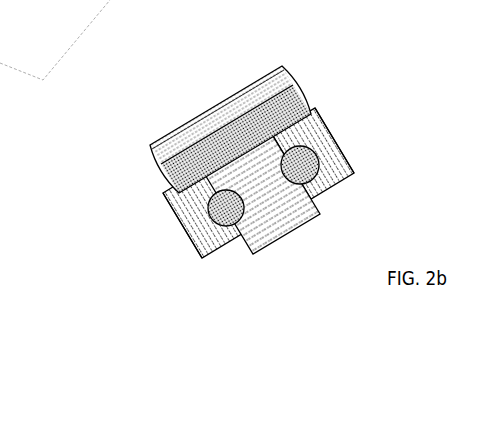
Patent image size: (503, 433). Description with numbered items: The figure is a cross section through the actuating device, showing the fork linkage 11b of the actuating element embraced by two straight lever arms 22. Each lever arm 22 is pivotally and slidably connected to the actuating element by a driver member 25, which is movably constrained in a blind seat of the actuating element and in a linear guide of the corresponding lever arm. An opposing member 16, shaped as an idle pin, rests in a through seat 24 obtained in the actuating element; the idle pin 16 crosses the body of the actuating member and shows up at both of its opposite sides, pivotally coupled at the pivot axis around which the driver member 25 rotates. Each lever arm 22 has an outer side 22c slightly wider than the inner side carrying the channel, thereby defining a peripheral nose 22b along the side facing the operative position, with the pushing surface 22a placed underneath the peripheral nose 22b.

The fork linkage 11b is at (234, 183).
The opposing member 16 is at (293, 110).
The lever arm 22 is at (278, 187).
The pushing surface 22a is at (185, 192).
The peripheral nose 22b is at (313, 108).
The outer side 22c is at (333, 132).
The through seat 24 is at (222, 146).
The driver member 25 is at (303, 168).